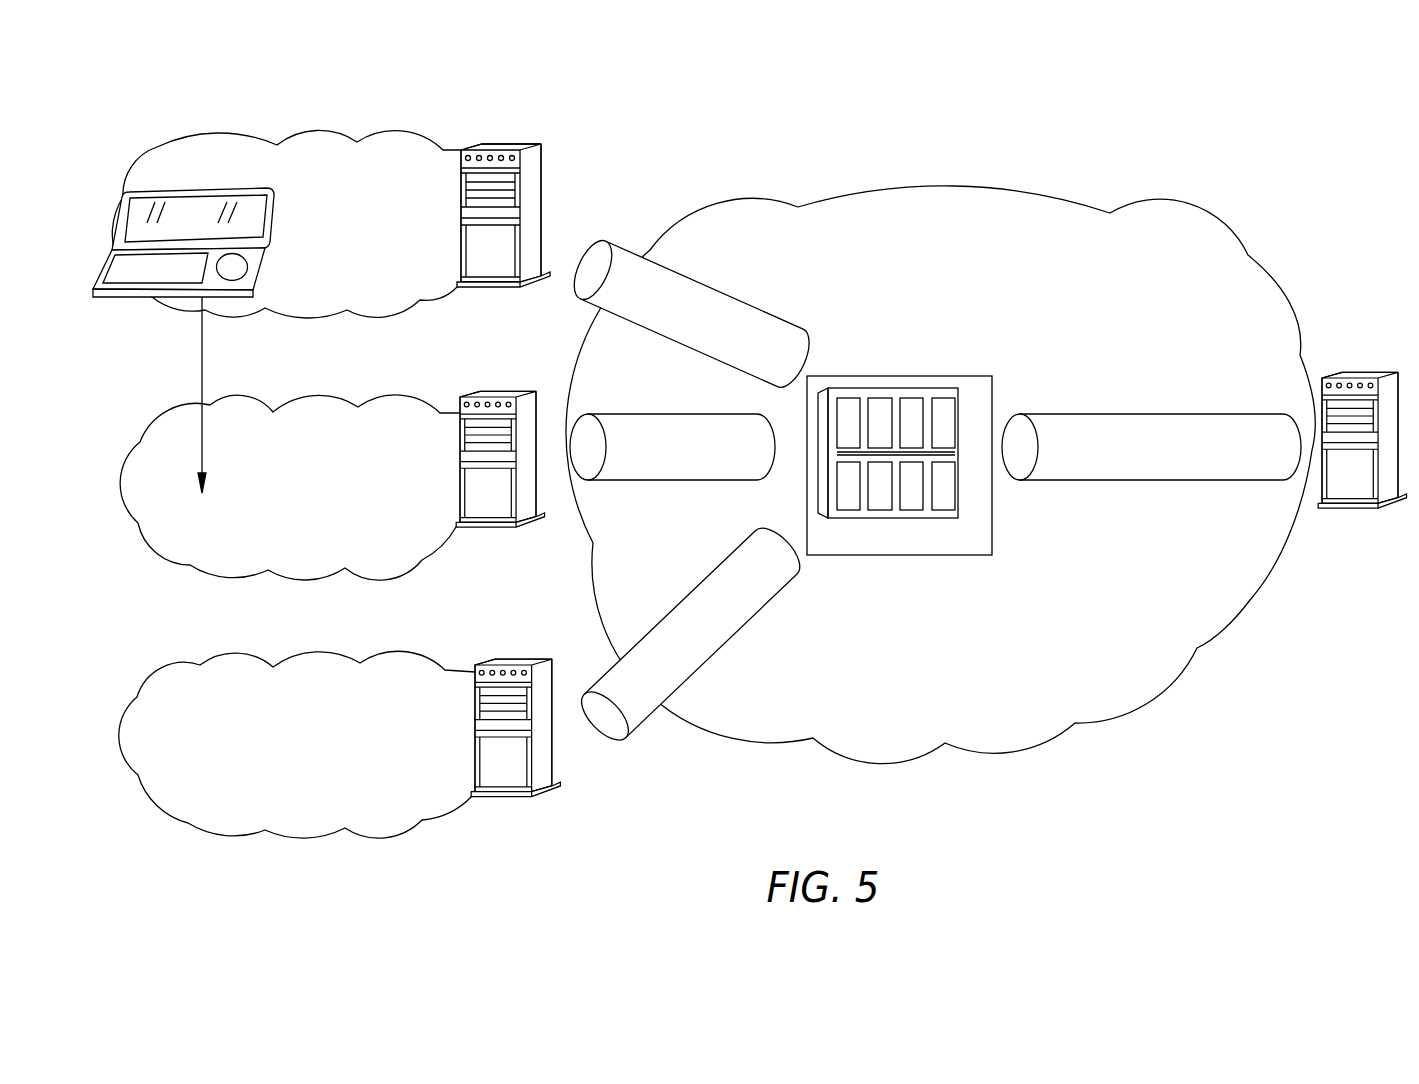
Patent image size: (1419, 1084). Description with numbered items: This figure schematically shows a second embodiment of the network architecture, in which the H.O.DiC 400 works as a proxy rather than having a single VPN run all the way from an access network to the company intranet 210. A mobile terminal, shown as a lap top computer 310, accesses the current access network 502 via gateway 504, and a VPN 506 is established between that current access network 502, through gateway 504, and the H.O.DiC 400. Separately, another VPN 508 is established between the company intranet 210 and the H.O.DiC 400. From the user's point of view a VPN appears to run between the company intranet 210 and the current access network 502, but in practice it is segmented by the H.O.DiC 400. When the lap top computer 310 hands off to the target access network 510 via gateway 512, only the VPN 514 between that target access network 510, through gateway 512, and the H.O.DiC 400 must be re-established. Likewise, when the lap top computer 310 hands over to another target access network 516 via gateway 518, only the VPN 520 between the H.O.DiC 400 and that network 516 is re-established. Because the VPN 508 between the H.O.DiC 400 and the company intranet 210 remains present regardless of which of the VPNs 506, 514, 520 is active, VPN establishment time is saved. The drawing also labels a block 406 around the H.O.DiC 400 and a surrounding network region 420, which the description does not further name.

The lap top computer 310 is at (127, 298).
The current access network 502 is at (393, 318).
The gateway 504 is at (509, 143).
The target access network 510 is at (397, 578).
The gateway 512 is at (503, 532).
The another target access network 516 is at (388, 838).
The gateway 518 is at (518, 805).
The core network (Internet) 420 is at (1028, 272).
The VPN 506 is at (730, 289).
The VPN 514 is at (656, 481).
The VPN 520 is at (740, 638).
The VPN 508 is at (1126, 413).
The handover domain controller (H.O. DiC) 406 is at (993, 538).
The H.O.DiC 400 is at (945, 408).
The company intranet 210 is at (1352, 515).